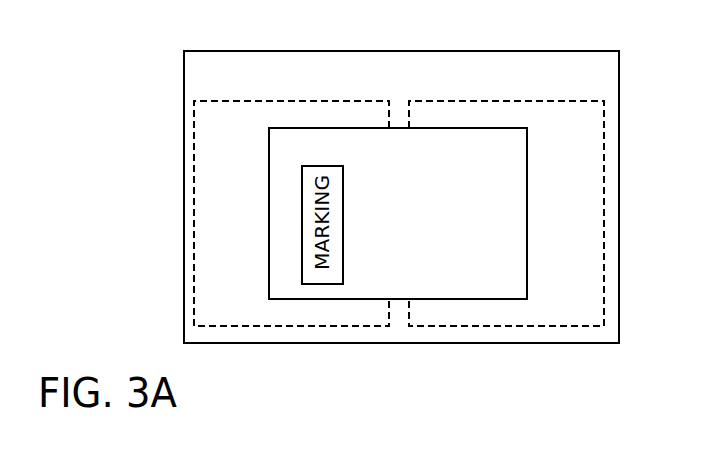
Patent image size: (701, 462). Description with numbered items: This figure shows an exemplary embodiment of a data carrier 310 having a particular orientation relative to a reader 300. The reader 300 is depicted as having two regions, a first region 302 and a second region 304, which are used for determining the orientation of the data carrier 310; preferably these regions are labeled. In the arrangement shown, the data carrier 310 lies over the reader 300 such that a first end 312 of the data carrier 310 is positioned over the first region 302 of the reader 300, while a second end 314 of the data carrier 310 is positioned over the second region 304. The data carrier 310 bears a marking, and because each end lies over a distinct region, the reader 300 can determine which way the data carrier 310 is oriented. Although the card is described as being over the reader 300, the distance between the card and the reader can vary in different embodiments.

The reader 300 is at (184, 98).
The first region 302 is at (303, 327).
The second region 304 is at (515, 327).
The data carrier 310 is at (398, 213).
The first end 312 is at (269, 217).
The second end 314 is at (527, 215).